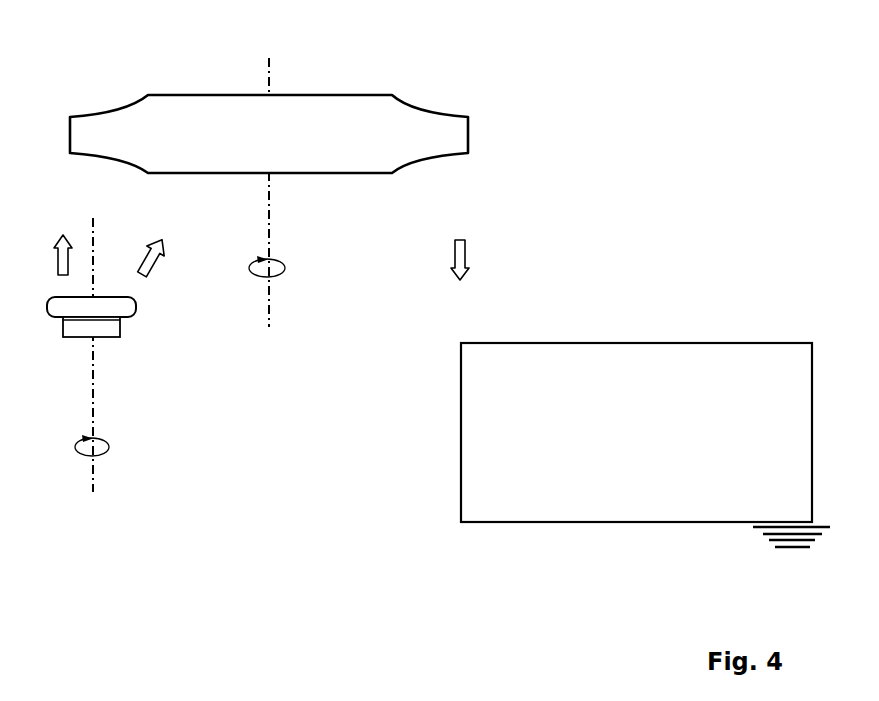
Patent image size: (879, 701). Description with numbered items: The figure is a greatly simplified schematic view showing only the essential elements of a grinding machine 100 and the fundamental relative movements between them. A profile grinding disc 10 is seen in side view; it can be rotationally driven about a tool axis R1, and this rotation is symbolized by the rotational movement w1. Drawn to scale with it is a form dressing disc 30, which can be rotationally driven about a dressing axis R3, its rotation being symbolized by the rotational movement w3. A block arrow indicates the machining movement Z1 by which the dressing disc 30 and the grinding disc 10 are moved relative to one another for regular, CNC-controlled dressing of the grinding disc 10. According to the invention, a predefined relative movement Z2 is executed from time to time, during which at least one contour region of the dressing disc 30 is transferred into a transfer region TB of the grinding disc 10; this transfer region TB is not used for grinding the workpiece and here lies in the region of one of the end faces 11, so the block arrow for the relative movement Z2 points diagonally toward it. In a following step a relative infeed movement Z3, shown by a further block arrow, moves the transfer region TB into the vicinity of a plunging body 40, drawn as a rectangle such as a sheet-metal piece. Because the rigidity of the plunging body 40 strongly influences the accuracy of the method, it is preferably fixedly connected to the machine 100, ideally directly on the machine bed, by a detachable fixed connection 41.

The grinding machine 100 is at (658, 95).
The grinding disc 10 is at (305, 124).
The end faces 11 is at (323, 79).
The dressing disc 30 is at (137, 306).
The plunging body 40 is at (715, 402).
The fixed connection 41 is at (737, 540).
The tool axis R1 is at (270, 176).
The dressing axis R3 is at (92, 366).
The machining movement Z1 is at (45, 255).
The relative movement Z2 is at (159, 258).
The relative infeed movement Z3 is at (475, 260).
The transfer region TB is at (225, 175).
The rotational movement of the grinding disc w1 is at (277, 263).
The rotational movement of the dressing disc w3 is at (103, 441).